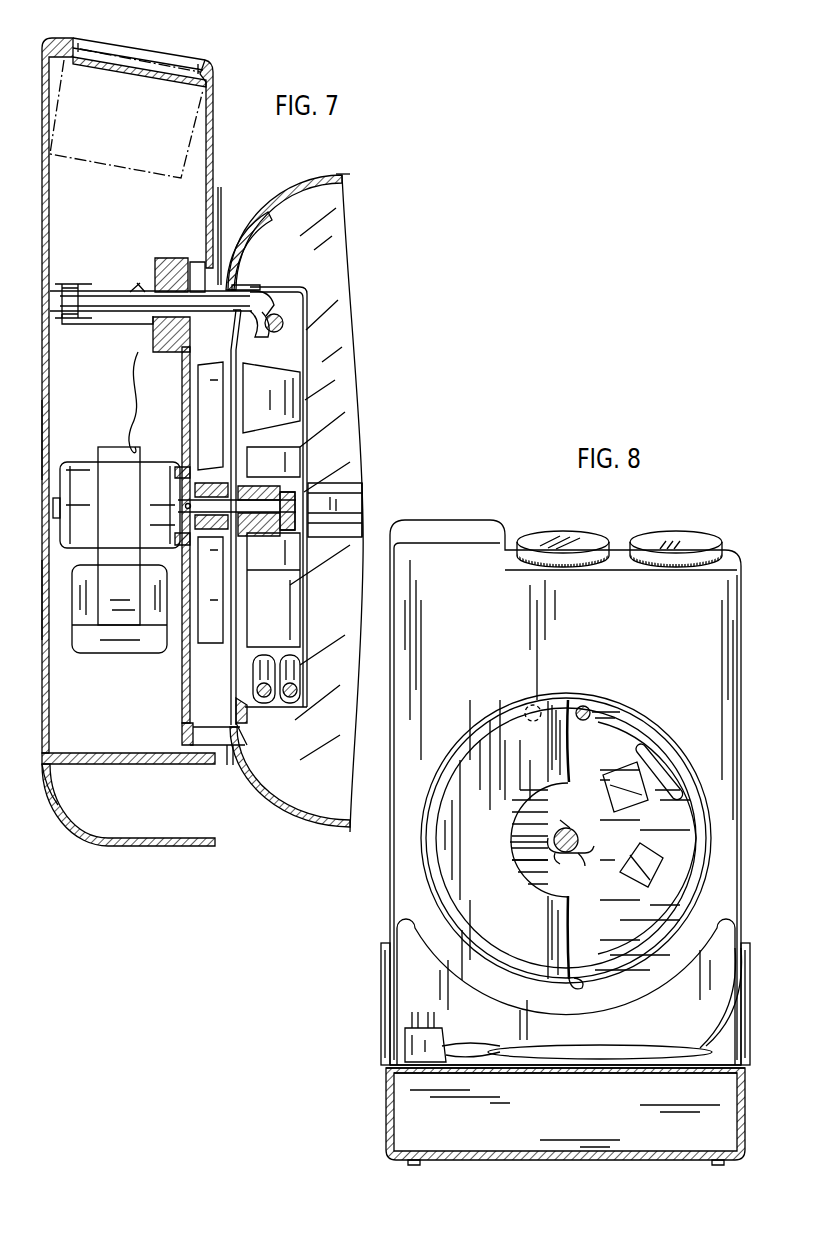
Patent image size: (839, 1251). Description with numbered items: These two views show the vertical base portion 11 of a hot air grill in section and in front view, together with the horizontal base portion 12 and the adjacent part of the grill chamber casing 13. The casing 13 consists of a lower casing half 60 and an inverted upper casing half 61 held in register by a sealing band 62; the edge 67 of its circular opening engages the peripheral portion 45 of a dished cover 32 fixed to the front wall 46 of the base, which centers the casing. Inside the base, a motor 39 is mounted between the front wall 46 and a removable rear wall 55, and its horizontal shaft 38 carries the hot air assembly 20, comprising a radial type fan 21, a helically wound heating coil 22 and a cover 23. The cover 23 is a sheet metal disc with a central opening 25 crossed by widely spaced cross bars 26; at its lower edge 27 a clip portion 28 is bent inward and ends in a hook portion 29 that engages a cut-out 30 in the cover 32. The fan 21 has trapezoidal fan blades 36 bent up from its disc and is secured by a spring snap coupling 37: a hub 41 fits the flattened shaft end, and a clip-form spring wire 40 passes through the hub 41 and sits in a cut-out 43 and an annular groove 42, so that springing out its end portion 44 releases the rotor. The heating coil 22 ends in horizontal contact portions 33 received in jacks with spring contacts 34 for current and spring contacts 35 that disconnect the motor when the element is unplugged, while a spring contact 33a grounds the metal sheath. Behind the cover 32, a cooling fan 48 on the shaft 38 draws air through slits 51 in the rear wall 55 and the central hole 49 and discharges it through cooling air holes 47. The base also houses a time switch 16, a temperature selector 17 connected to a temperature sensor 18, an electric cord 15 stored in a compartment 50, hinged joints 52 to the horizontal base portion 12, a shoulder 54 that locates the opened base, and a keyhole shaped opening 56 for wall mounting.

In FIG. 7, the vertical base portion 11 is at (84, 838).
In FIG. 8, the vertical base portion 11 is at (453, 509).
In FIG. 8, the horizontal base portion 12 is at (386, 1122).
In FIG. 7, the grill chamber casing 13 is at (327, 166).
In FIG. 8, the electric cord 15 is at (486, 1020).
In FIG. 7, the time switch 16 is at (168, 55).
In FIG. 8, the time switch 16 is at (587, 538).
In FIG. 8, the temperature selector 17 is at (673, 538).
In FIG. 8, the temperature sensor 18 is at (665, 758).
In FIG. 8, the hot air assembly 20 is at (487, 713).
In FIG. 7, the radial type fan 21 is at (311, 382).
In FIG. 8, the radial type fan 21 is at (625, 905).
In FIG. 7, the heating coil 22 is at (284, 320).
In FIG. 7, the cover 23 is at (352, 345).
In FIG. 8, the cover 23 is at (490, 745).
In FIG. 7, the central opening 25 is at (304, 590).
In FIG. 8, the central opening 25 is at (528, 800).
In FIG. 7, the cross bars 26 is at (304, 448).
In FIG. 8, the cross bars 26 is at (525, 860).
In FIG. 7, the lower edge 27 is at (305, 712).
In FIG. 7, the clip portion 28 is at (275, 708).
In FIG. 7, the hook portion 29 is at (246, 730).
In FIG. 7, the cut-out 30 is at (238, 706).
In FIG. 8, the cut-out 30 is at (572, 986).
In FIG. 7, the dished cover 32 is at (229, 748).
In FIG. 8, the dished cover 32 is at (572, 698).
In FIG. 7, the contact portions 33 is at (122, 298).
In FIG. 8, the contact portions 33 is at (527, 705).
In FIG. 7, the spring contact 33a is at (150, 262).
In FIG. 7, the spring contacts 34 is at (72, 276).
In FIG. 7, the spring contacts 35 is at (82, 322).
In FIG. 7, the fan blades 36 is at (292, 402).
In FIG. 8, the fan blades 36 is at (638, 882).
In FIG. 8, the spring snap coupling 37 is at (570, 809).
In FIG. 7, the motor shaft 38 is at (205, 500).
In FIG. 8, the motor shaft 38 is at (586, 856).
In FIG. 7, the motor 39 is at (86, 462).
In FIG. 8, the clip-form spring wire 40 is at (578, 832).
In FIG. 7, the hub 41 is at (288, 518).
In FIG. 8, the hub 41 is at (545, 838).
In FIG. 7, the annular groove 42 is at (364, 520).
In FIG. 8, the cut-out 43 is at (558, 854).
In FIG. 8, the end portion 44 is at (593, 846).
In FIG. 7, the peripheral portion 45 is at (232, 282).
In FIG. 7, the front wall 46 is at (191, 347).
In FIG. 7, the cooling air holes 47 is at (219, 280).
In FIG. 7, the cooling fan 48 is at (212, 636).
In FIG. 7, the central hole 49 is at (178, 597).
In FIG. 7, the compartment 50 is at (150, 818).
In FIG. 8, the compartment 50 is at (592, 1036).
In FIG. 7, the slits 51 is at (44, 588).
In FIG. 8, the hinged joints 52 is at (381, 990).
In FIG. 7, the shoulder 54 is at (48, 778).
In FIG. 7, the rear wall 55 is at (44, 432).
In FIG. 7, the keyhole shaped opening 56 is at (44, 240).
In FIG. 7, the lower casing half 60 is at (313, 830).
In FIG. 7, the upper casing half 61 is at (343, 176).
In FIG. 7, the sealing band 62 is at (364, 486).
In FIG. 7, the edge 67 is at (238, 287).